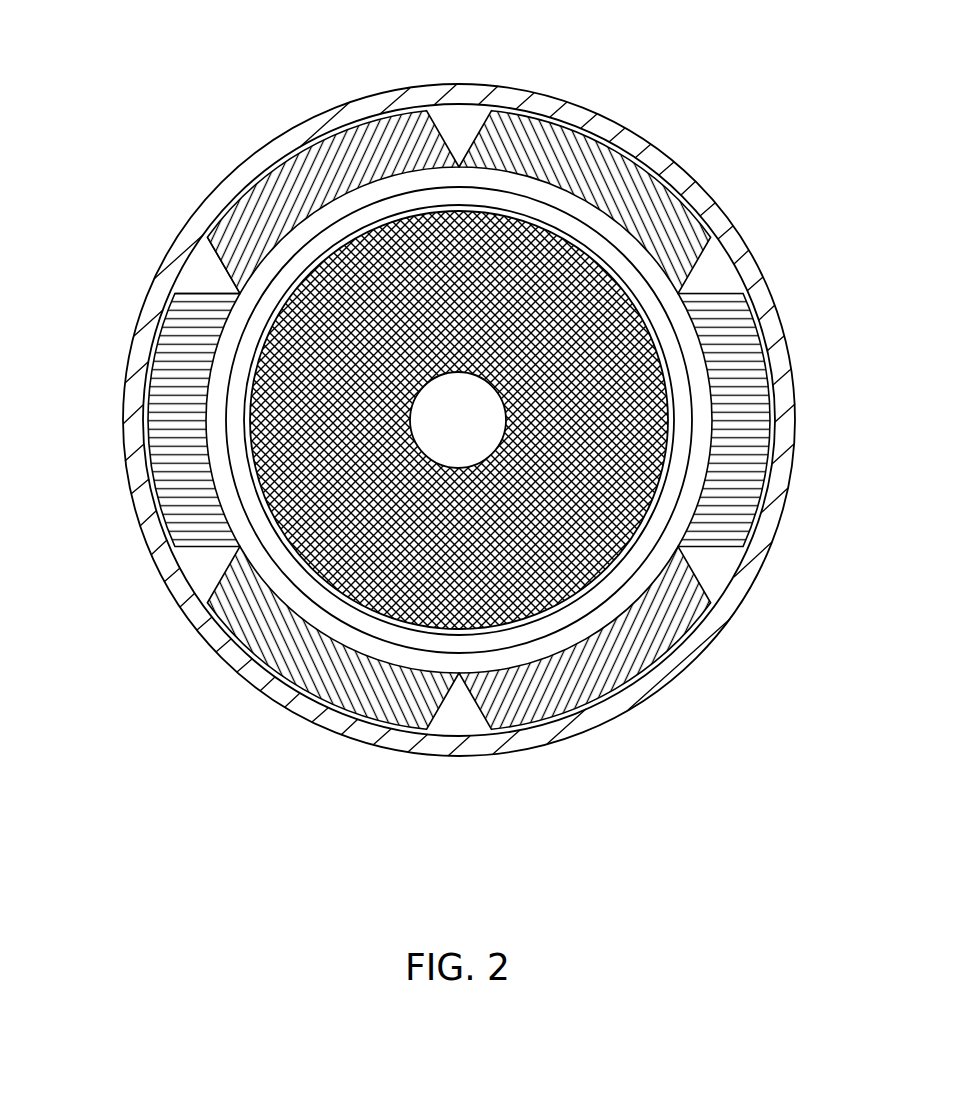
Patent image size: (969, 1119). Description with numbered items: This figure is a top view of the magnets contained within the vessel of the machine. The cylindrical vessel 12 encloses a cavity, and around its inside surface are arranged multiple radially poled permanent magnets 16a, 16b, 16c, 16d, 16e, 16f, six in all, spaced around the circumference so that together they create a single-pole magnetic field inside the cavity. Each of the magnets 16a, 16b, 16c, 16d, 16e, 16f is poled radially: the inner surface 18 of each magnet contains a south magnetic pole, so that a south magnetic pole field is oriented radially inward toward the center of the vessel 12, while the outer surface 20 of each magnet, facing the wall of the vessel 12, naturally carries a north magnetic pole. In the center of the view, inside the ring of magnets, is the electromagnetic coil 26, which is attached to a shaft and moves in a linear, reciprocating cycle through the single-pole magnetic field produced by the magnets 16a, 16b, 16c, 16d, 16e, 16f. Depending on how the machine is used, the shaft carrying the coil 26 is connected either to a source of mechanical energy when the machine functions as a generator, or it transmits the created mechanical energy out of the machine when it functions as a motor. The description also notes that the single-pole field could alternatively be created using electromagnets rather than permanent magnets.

The cylindrical vessel 12 is at (471, 86).
The permanent magnet 16a is at (614, 131).
The permanent magnet 16b is at (752, 394).
The permanent magnet 16c is at (622, 650).
The permanent magnet 16d is at (300, 688).
The permanent magnet 16e is at (156, 428).
The permanent magnet 16f is at (276, 183).
The inner surface 18 is at (258, 276).
The outer surface 20 is at (586, 697).
The electromagnetic coil 26 is at (637, 521).